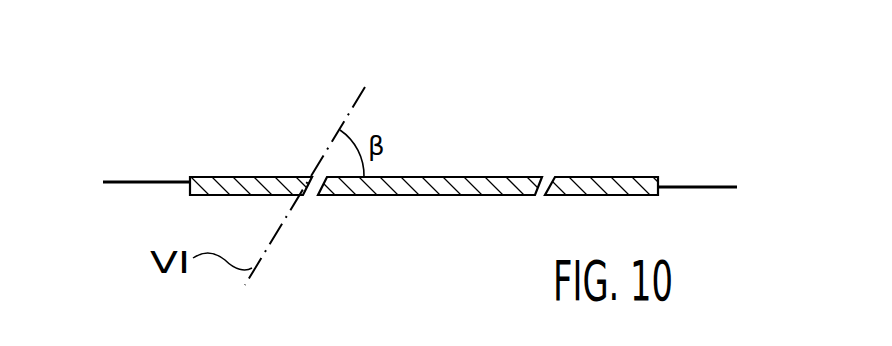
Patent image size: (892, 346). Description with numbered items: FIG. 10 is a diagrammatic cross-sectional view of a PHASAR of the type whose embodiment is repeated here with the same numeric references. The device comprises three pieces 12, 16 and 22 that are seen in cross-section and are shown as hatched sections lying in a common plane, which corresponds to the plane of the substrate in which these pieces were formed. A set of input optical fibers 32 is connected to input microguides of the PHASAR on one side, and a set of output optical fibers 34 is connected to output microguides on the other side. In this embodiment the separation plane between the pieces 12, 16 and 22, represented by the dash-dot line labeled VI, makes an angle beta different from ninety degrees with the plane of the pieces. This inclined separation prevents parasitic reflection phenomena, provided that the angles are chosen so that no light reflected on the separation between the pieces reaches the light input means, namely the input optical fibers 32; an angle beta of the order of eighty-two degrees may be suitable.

The input optical fibers 32 is at (122, 181).
The piece 12 is at (252, 178).
The piece 16 is at (482, 177).
The piece 22 is at (598, 182).
The output optical fibers 34 is at (712, 186).